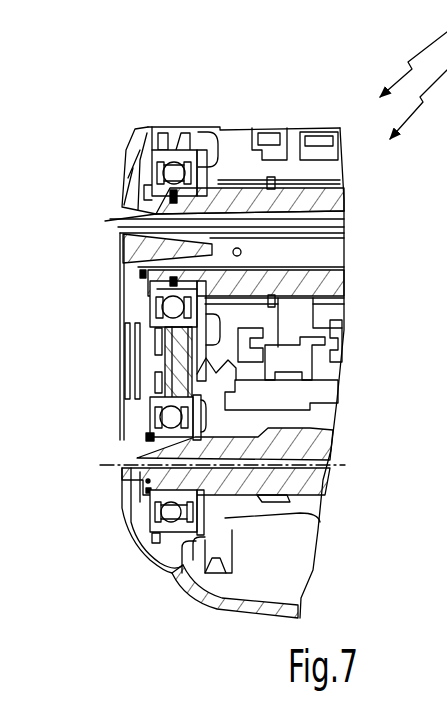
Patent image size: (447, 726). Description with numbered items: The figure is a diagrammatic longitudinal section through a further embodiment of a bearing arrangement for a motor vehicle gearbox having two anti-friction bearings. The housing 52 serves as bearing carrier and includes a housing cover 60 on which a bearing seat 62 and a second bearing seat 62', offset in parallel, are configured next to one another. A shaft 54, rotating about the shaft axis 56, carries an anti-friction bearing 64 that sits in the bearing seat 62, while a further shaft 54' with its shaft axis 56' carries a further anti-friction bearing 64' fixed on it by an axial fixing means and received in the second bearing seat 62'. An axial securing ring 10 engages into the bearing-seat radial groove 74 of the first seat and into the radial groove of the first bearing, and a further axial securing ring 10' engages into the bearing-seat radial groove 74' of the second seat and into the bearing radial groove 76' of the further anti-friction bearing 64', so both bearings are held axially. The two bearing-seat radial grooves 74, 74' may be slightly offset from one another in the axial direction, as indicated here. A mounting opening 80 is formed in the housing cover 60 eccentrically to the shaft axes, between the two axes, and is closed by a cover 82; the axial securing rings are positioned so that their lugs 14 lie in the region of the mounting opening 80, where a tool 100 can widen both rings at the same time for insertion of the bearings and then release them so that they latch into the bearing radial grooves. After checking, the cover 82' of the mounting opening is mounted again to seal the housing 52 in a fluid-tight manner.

The axial securing ring 10 is at (190, 170).
The lug 14 is at (150, 328).
The housing 52 is at (268, 617).
The shaft 54 is at (299, 191).
The shaft axis 56 is at (278, 270).
The housing cover 60 is at (138, 194).
The bearing seat 62 is at (232, 108).
The anti-friction bearing 64 is at (174, 111).
The bearing-seat radial groove 74 is at (208, 225).
The mounting opening 80 is at (152, 346).
The cover 82 is at (86, 361).
The cover 82' is at (114, 413).
The bearing radial groove 76' is at (124, 446).
The further shaft 54' is at (191, 497).
The further axial securing ring 10' is at (113, 535).
The bearing-seat radial groove 74' is at (113, 562).
The further anti-friction bearing 64' is at (165, 581).
The second bearing seat 62' is at (207, 592).
The shaft axis 56' is at (262, 485).
The tool 100 is at (446, 402).